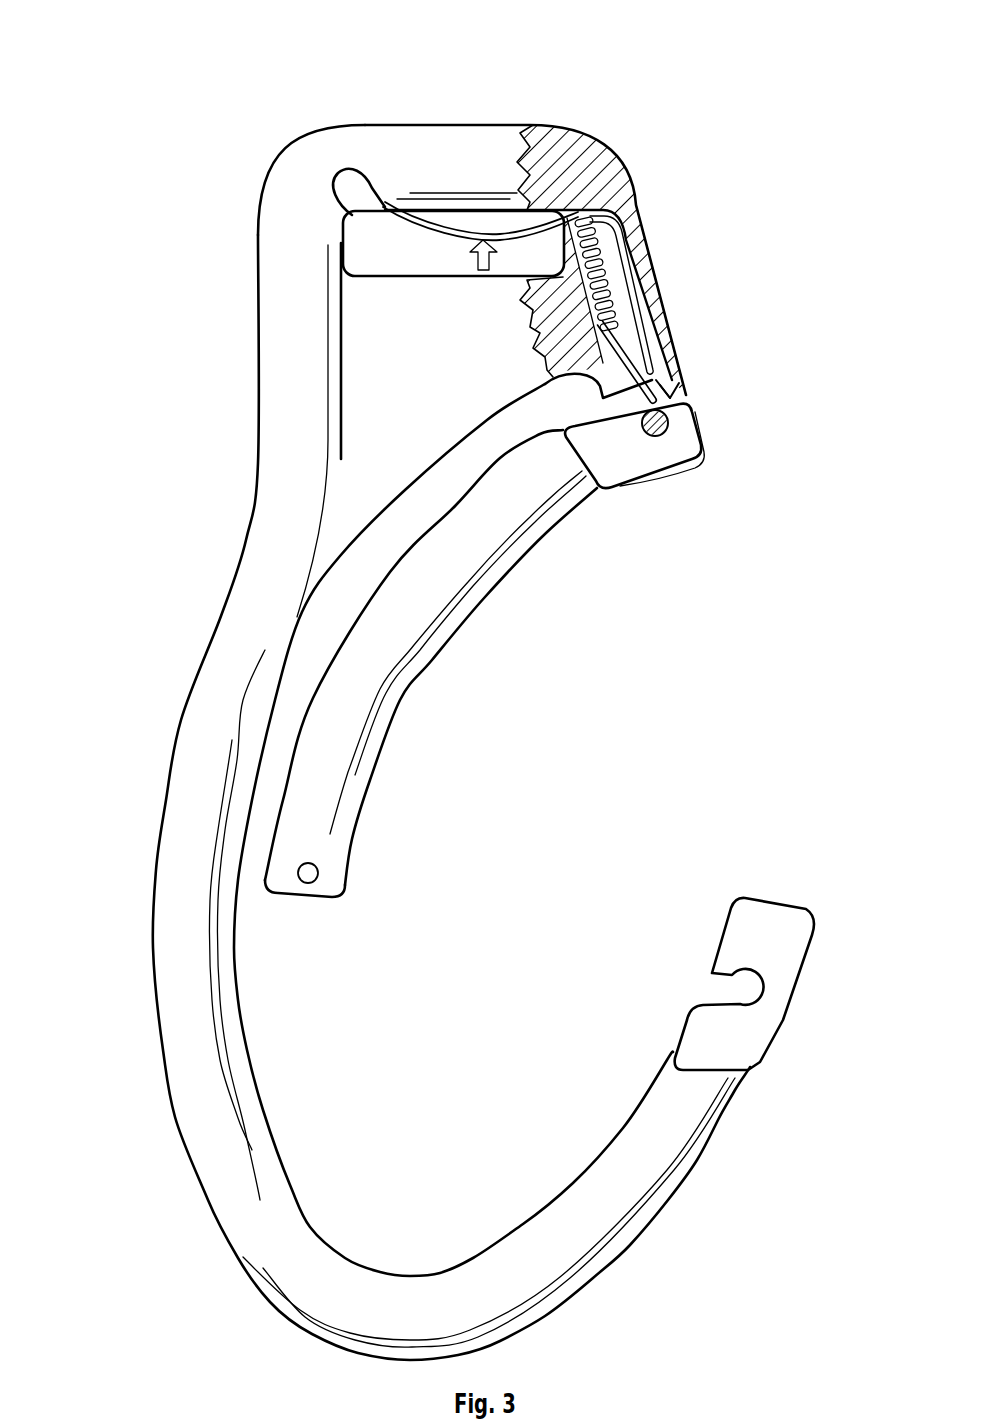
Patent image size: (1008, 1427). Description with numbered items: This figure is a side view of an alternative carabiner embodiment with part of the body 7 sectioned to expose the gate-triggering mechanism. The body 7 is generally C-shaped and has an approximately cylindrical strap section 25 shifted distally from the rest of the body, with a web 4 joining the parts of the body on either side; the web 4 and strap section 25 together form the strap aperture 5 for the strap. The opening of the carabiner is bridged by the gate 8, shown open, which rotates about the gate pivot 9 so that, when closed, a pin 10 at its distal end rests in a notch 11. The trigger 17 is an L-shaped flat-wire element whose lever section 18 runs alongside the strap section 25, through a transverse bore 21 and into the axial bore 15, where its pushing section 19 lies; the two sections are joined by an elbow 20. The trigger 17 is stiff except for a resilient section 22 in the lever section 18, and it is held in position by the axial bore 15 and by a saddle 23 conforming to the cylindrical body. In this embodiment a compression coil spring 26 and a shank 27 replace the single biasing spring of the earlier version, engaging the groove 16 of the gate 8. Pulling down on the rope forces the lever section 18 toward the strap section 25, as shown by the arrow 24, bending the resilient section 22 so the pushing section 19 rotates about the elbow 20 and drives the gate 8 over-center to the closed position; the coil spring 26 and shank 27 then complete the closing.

The web 4 is at (430, 355).
The strap aperture 5 is at (397, 248).
The body 7 is at (170, 785).
The gate 8 is at (400, 705).
The gate pivot 9 is at (663, 437).
The pin 10 is at (316, 880).
The notch 11 is at (727, 1005).
The axial bore 15 is at (605, 340).
The groove 16 is at (667, 393).
The trigger 17 is at (402, 217).
The lever section 18 is at (412, 224).
The pushing section 19 is at (650, 337).
The elbow 20 is at (617, 210).
The transverse bore 21 is at (568, 243).
The resilient section 22 is at (488, 233).
The saddle 23 is at (338, 170).
The arrow 24 is at (480, 233).
The strap section 25 is at (472, 123).
The compression coil spring 26 is at (603, 263).
The shank 27 is at (666, 384).